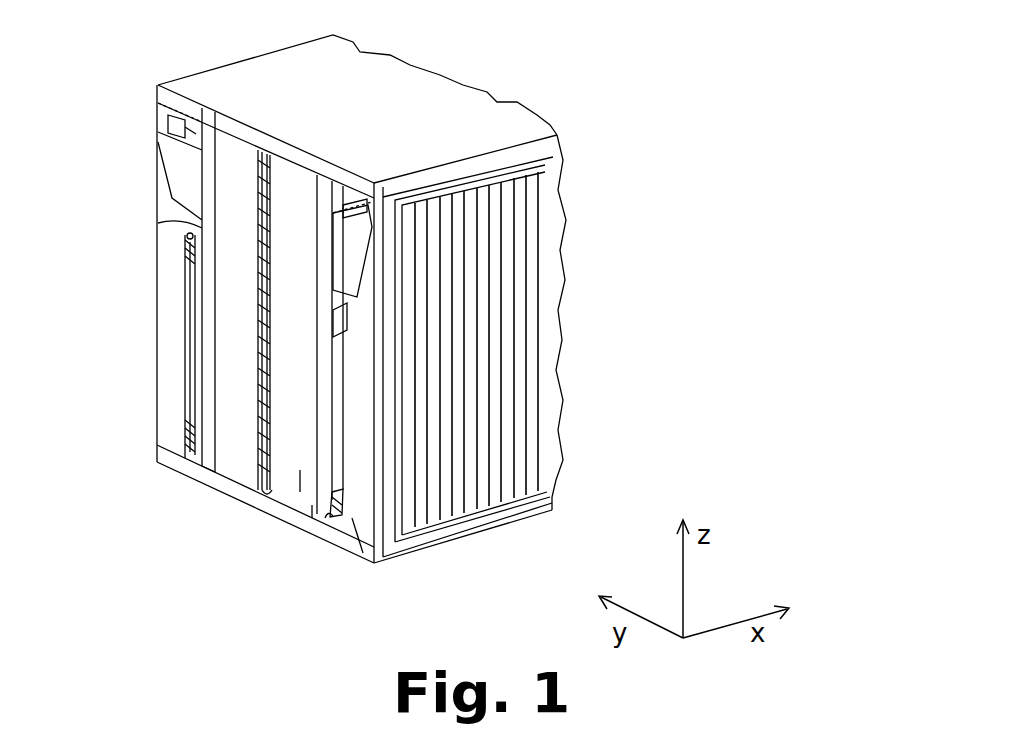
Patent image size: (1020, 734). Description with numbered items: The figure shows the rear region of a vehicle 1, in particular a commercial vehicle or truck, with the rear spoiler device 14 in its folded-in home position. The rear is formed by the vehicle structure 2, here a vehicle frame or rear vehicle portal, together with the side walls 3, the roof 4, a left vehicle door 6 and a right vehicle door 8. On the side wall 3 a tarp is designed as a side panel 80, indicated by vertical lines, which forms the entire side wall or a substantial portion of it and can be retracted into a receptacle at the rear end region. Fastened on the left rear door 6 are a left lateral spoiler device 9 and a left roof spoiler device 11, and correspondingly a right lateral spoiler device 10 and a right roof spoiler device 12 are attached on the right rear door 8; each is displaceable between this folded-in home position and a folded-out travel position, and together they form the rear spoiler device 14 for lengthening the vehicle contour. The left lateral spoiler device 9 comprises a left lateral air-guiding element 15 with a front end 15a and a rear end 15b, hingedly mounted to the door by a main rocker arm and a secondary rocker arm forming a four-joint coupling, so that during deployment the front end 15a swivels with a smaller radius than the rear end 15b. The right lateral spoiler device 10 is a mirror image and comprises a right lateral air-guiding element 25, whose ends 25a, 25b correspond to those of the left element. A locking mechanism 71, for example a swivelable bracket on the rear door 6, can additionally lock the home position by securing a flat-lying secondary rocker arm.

The vehicle 1 is at (353, 43).
The vehicle structure 2 is at (158, 100).
The side walls 3 is at (552, 343).
The roof 4 is at (237, 88).
The left vehicle door 6 is at (173, 300).
The right vehicle door 8 is at (370, 563).
The left lateral spoiler device 9 is at (166, 432).
The right lateral spoiler device 10 is at (352, 518).
The left roof spoiler device 11 is at (158, 142).
The right roof spoiler device 12 is at (350, 227).
The rear spoiler device 14 is at (307, 145).
The left lateral air-guiding element 15 is at (232, 455).
The front end of the left lateral air-guiding element 15a is at (158, 223).
The rear end of the left lateral air-guiding element 15b is at (258, 468).
The right lateral air-guiding element 25 is at (300, 490).
The rail lower end 25a is at (312, 515).
The rail foot 25b is at (268, 498).
The locking mechanism 71 is at (183, 243).
The side panel 80 is at (483, 498).